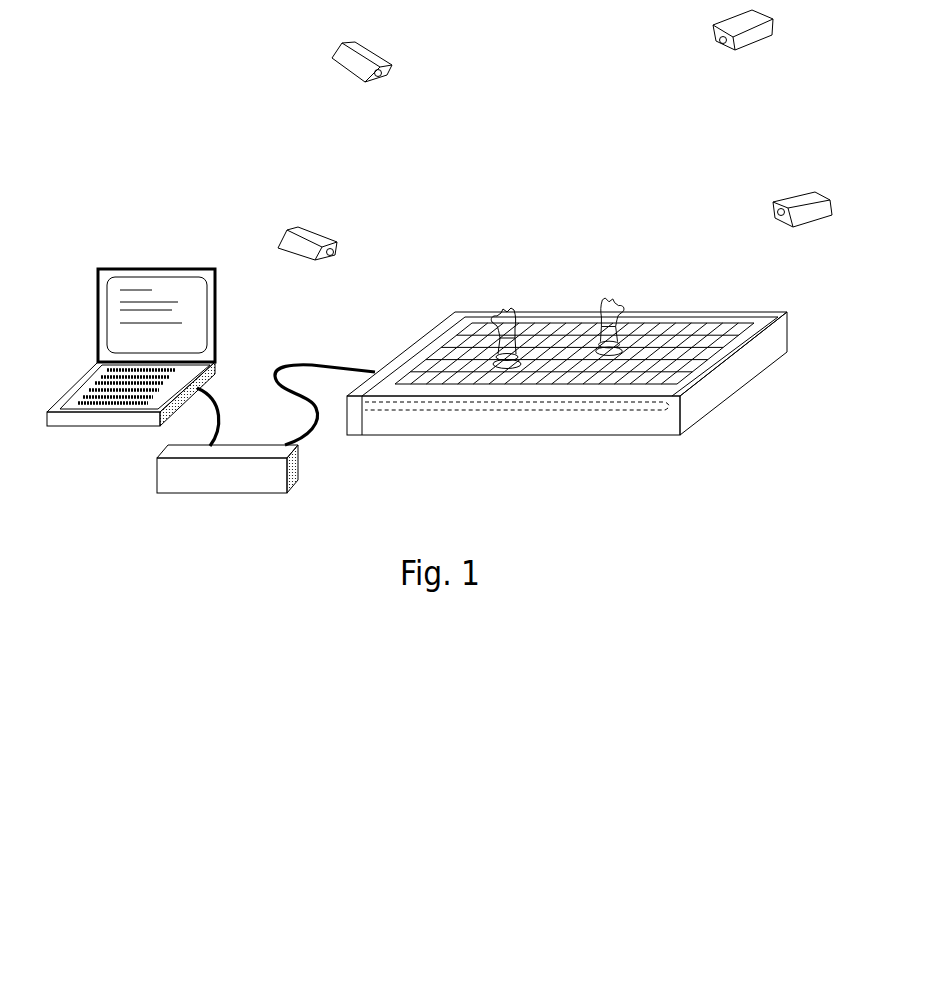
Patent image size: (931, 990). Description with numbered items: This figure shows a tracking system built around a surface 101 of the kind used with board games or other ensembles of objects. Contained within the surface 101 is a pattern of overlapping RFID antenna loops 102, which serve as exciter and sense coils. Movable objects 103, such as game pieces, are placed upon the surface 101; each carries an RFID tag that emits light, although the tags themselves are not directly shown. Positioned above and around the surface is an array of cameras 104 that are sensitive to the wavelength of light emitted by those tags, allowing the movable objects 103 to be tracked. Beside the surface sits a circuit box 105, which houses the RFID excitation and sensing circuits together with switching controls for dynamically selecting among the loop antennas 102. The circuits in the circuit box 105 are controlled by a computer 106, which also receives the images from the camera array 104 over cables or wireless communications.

The surface 101 is at (739, 429).
The RFID antenna loops 102 is at (415, 410).
The movable objects 103 is at (513, 308).
The array of cameras 104 is at (738, 194).
The circuit box 105 is at (248, 478).
The computer 106 is at (183, 239).